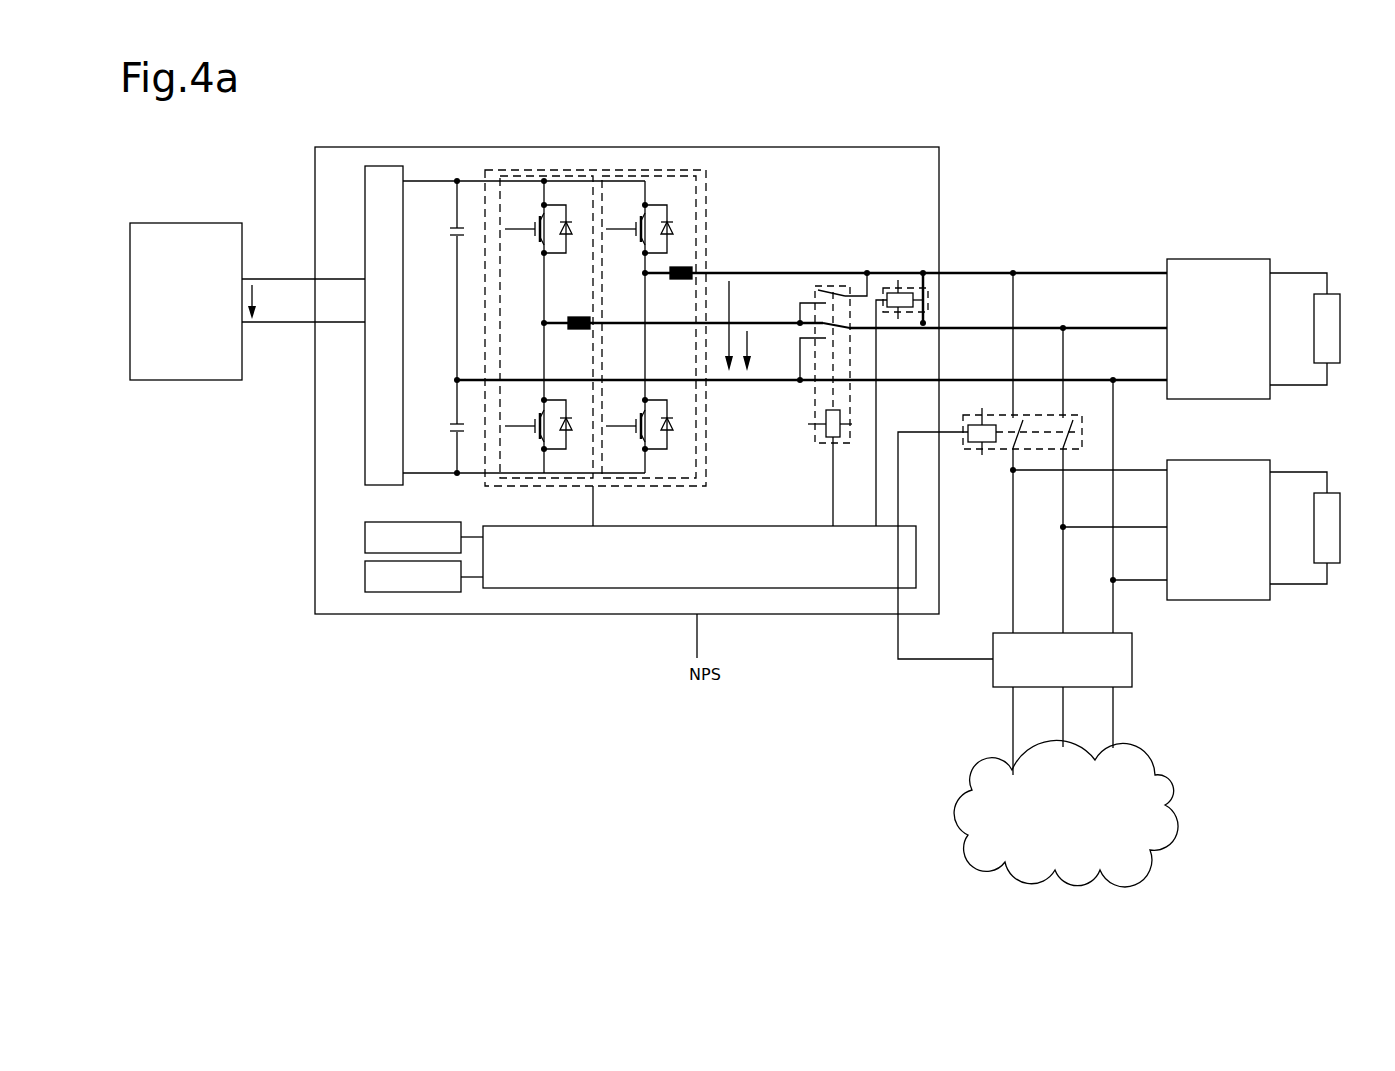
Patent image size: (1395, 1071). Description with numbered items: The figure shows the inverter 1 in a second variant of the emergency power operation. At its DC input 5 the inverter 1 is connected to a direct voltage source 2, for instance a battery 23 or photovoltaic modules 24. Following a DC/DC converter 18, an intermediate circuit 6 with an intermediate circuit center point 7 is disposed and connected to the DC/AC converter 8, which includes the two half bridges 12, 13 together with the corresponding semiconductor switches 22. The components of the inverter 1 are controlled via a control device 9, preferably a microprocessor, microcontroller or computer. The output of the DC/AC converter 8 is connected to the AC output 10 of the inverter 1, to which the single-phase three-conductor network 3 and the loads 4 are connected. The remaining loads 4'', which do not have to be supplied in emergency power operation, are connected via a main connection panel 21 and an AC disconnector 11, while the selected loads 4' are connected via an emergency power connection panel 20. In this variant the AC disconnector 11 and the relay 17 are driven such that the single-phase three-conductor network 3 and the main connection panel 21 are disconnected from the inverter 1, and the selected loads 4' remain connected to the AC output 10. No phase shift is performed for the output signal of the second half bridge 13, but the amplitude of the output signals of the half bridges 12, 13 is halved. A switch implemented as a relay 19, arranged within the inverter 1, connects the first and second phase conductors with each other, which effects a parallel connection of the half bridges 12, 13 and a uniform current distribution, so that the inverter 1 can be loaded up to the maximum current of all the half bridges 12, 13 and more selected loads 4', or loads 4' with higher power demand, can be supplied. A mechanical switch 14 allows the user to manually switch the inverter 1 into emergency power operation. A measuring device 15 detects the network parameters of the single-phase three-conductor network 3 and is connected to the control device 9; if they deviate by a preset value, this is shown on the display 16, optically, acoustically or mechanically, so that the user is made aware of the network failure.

The inverter 1 is at (940, 173).
The direct voltage source 2 is at (186, 318).
The battery 23 is at (186, 348).
The photovoltaic modules 24 is at (202, 380).
The single-phase three-conductor network 3 is at (1066, 787).
The loads 4 is at (1326, 440).
The selected loads 4' is at (1326, 299).
The remaining loads 4'' is at (1325, 569).
The DC input 5 is at (300, 293).
The intermediate circuit 6 is at (443, 424).
The intermediate circuit center point 7 is at (456, 331).
The DC/AC converter 8 is at (639, 319).
The control device 9 is at (699, 557).
The AC output 10 is at (955, 285).
The AC disconnector 11 is at (996, 450).
The first half bridge 12 is at (568, 175).
The second half bridge 13 is at (668, 175).
The switch 14 is at (424, 537).
The measuring device 15 is at (991, 689).
The display 16 is at (424, 577).
The relay 17 is at (814, 443).
The DC/DC converter 18 is at (383, 166).
The relay 19 is at (893, 288).
The emergency power connection panel 20 is at (1218, 329).
The main connection panel 21 is at (1218, 530).
The semiconductor switches 22 is at (532, 238).